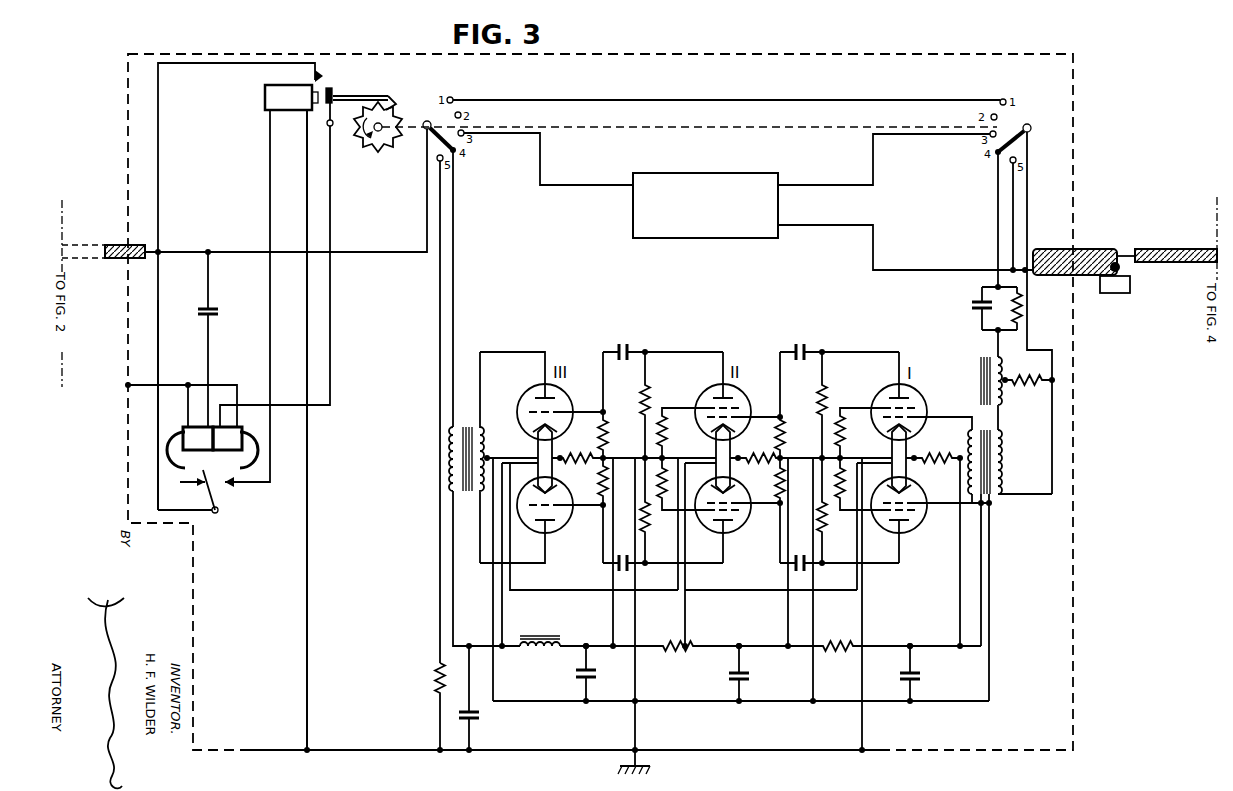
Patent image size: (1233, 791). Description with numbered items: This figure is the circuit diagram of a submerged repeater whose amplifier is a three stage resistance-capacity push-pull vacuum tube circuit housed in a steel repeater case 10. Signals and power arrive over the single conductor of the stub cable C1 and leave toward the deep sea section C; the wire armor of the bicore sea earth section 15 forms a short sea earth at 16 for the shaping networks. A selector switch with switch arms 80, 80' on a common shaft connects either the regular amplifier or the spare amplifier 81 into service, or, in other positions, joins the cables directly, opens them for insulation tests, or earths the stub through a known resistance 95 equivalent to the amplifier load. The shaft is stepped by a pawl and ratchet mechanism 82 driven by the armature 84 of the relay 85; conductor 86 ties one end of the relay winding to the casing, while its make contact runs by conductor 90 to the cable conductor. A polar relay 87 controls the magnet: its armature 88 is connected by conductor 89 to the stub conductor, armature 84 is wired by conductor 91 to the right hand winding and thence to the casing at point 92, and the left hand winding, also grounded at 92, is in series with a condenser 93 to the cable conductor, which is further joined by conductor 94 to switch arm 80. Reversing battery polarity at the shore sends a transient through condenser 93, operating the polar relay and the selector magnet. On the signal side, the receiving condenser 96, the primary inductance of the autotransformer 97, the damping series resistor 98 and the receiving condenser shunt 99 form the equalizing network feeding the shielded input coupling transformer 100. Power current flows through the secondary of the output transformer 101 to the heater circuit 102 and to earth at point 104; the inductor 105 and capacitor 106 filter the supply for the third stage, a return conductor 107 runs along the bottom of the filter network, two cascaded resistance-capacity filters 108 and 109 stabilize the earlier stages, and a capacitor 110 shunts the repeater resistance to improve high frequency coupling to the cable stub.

The steel repeater case 10 is at (722, 56).
The bicore sea earth section 15 is at (1093, 249).
The sea earth 16 is at (1102, 280).
The switch arm 80 is at (423, 149).
The switch arm 80' is at (1024, 297).
The spare amplifier 81 is at (641, 222).
The pawl and ratchet mechanism 82 is at (421, 107).
The armature 84 is at (333, 86).
The relay 85 is at (265, 98).
The conductor 86 is at (307, 452).
The polar relay 87 is at (222, 475).
The armature 88 is at (218, 512).
The conductor 89 is at (158, 372).
The conductor 90 is at (158, 158).
The conductor 91 is at (330, 368).
The casing connection point 92 is at (126, 387).
The condenser 93 is at (215, 306).
The conductor 94 is at (372, 258).
The resistance 95 is at (434, 676).
The receiving condenser 96 is at (972, 305).
The autotransformer 97 is at (984, 380).
The series resistor 98 is at (1040, 388).
The receiving condenser shunt 99 is at (1022, 308).
The input coupling transformer 100 is at (997, 426).
The output transformer 101 is at (476, 421).
The heater circuit 102 is at (453, 628).
The earth point 104 is at (866, 750).
The inductor 105 is at (546, 652).
The capacitor 106 is at (596, 674).
The conductor 107 is at (545, 702).
The resistance-capacity filter 108 is at (690, 655).
The resistance-capacity filter 109 is at (850, 655).
The capacitor 110 is at (478, 720).
The deep sea section C is at (1192, 248).
The stub cable C1 is at (97, 245).